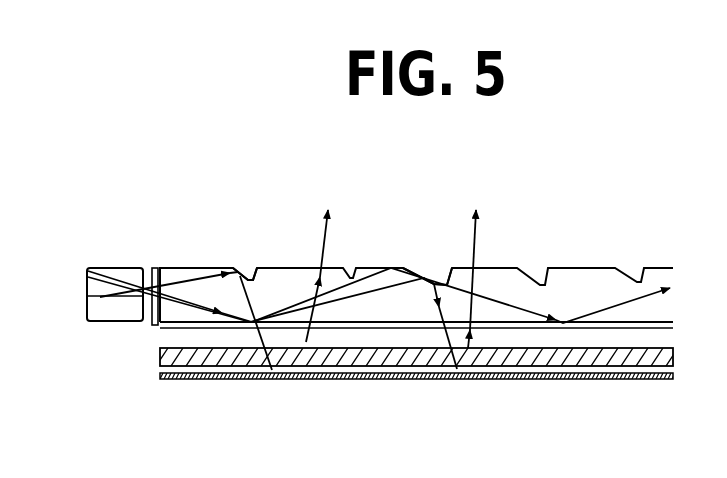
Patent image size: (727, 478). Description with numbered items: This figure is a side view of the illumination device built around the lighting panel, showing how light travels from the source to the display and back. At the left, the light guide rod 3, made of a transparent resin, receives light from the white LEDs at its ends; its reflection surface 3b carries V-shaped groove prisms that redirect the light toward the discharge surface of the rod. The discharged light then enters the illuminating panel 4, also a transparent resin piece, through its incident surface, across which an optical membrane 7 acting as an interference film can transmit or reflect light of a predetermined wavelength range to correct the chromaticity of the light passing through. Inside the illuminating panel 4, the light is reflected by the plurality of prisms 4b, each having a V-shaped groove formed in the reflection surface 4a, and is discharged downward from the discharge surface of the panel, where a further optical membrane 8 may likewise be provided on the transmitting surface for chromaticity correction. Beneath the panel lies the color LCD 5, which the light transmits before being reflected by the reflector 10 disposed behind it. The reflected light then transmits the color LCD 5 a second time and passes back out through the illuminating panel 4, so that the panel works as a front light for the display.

The light guide rod 3 is at (117, 273).
The reflection surface 3b is at (86, 300).
The optical membrane 7 is at (155, 268).
The illuminating panel 4 is at (416, 246).
The reflection surface 4a is at (510, 268).
The prisms 4b is at (344, 270).
The optical membrane 8 is at (345, 330).
The color LCD 5 is at (386, 364).
The reflector 10 is at (428, 381).